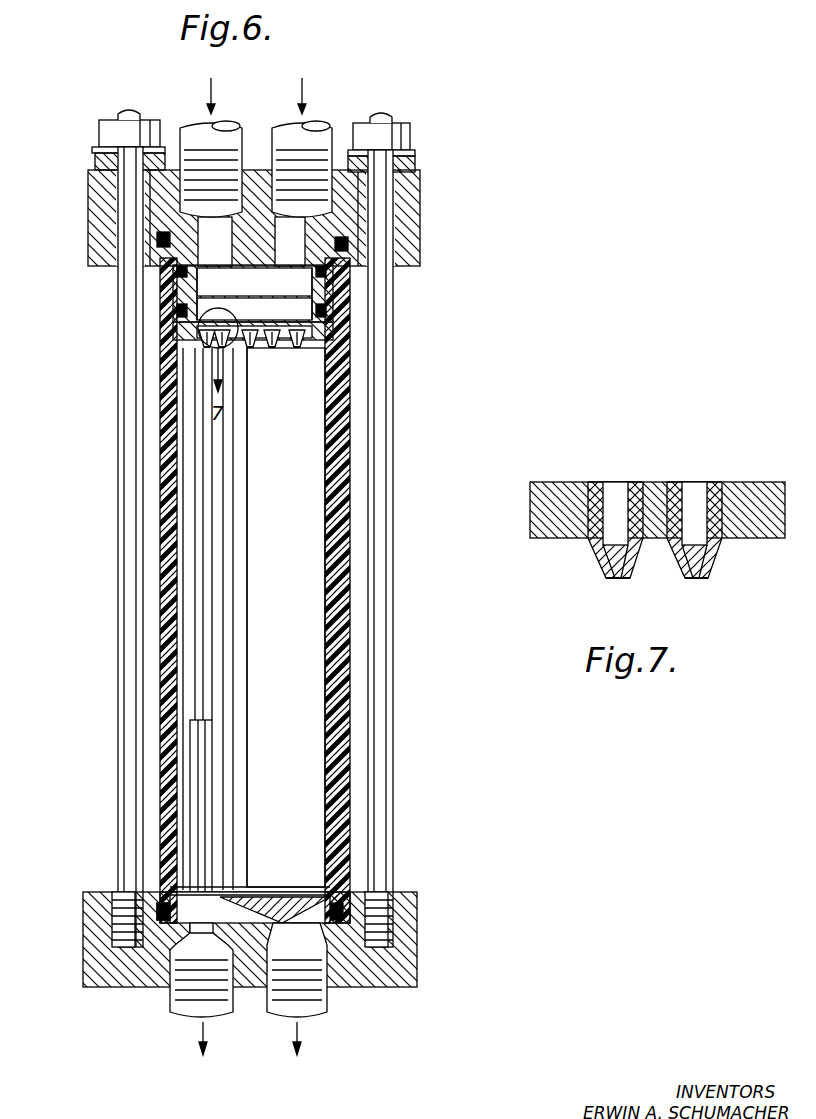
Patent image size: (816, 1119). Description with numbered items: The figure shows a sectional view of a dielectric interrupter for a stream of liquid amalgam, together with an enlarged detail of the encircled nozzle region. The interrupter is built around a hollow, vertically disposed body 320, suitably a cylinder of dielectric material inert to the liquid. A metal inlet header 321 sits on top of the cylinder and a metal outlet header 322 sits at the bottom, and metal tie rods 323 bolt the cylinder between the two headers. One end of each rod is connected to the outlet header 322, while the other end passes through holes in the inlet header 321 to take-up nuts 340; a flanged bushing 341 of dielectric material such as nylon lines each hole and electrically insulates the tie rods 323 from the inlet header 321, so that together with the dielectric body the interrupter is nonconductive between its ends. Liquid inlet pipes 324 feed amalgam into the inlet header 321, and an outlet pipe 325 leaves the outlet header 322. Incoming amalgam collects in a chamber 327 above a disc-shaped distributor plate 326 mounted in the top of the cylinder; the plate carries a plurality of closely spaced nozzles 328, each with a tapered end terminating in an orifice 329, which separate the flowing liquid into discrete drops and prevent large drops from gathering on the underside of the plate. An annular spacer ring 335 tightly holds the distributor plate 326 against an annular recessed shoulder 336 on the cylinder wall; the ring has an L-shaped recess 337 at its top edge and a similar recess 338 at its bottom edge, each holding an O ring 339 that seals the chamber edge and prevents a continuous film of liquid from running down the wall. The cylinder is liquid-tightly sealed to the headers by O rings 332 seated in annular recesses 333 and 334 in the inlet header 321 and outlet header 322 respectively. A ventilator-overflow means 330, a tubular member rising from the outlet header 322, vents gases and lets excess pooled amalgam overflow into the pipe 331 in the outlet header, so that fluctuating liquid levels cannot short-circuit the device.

In FIG. 6, the hollow body 320 is at (350, 392).
In FIG. 6, the inlet header 321 is at (420, 215).
In FIG. 6, the outlet header 322 is at (412, 943).
In FIG. 6, the tie rods 323 is at (128, 553).
In FIG. 6, the liquid inlet pipes 324 is at (190, 130).
In FIG. 6, the outlet pipe 325 is at (318, 1002).
In FIG. 6, the distributor plate 326 is at (335, 333).
In FIG. 7, the distributor plate 326 is at (545, 512).
In FIG. 6, the chamber 327 is at (330, 305).
In FIG. 6, the nozzles 328 is at (197, 324).
In FIG. 7, the nozzles 328 is at (678, 490).
In FIG. 6, the orifices 329 is at (207, 346).
In FIG. 7, the orifices 329 is at (678, 605).
In FIG. 6, the ventilator-overflow means 330 is at (208, 785).
In FIG. 6, the pipe 331 is at (190, 1012).
In FIG. 6, the O rings 332 is at (345, 248).
In FIG. 6, the annular recess 333 is at (165, 246).
In FIG. 6, the annular recess 334 is at (112, 905).
In FIG. 6, the annular spacer ring 335 is at (318, 300).
In FIG. 6, the annular recessed shoulder 336 is at (325, 350).
In FIG. 6, the annular L-shaped recess 337 is at (190, 272).
In FIG. 6, the recess 338 is at (318, 312).
In FIG. 6, the O ring 339 is at (322, 272).
In FIG. 6, the take-up nuts 340 is at (108, 127).
In FIG. 6, the flanged bushing 341 is at (100, 160).